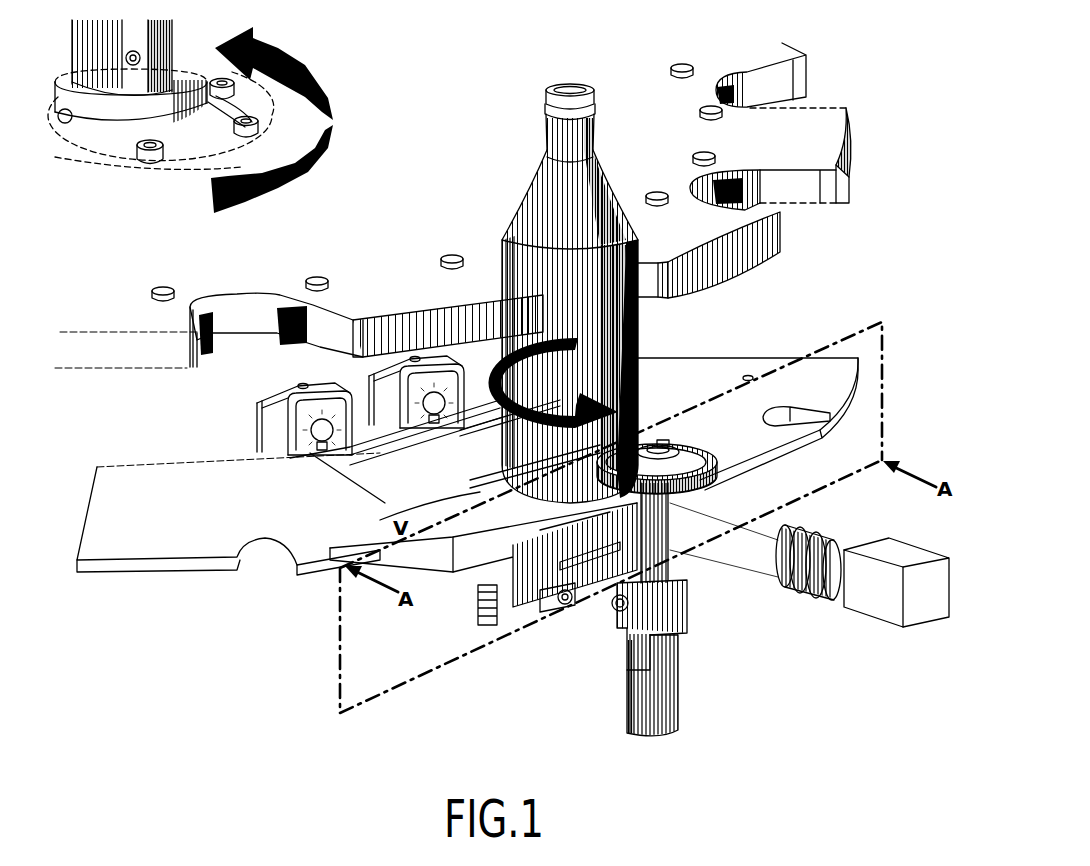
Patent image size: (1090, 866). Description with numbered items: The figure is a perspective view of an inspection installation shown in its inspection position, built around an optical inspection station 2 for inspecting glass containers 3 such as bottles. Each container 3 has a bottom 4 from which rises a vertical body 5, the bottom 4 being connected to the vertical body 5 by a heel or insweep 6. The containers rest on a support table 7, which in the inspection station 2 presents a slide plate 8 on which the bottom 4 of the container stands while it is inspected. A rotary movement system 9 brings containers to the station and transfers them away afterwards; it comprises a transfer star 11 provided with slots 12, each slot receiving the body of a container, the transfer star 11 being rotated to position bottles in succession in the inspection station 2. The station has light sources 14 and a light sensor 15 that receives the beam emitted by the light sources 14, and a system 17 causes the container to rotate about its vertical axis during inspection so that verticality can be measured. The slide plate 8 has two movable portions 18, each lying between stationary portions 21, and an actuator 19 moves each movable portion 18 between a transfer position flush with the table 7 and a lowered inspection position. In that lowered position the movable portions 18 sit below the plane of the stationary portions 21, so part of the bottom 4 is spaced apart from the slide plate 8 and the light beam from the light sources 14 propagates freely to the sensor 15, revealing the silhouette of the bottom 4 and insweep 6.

The optical inspection station 2 is at (809, 602).
The container 3 is at (550, 293).
The bottom 4 is at (532, 503).
The vertical body 5 is at (622, 328).
The heel or insweep 6 is at (505, 488).
The support table 7 is at (728, 380).
The slide plate 8 is at (397, 445).
The movement system 9 is at (767, 170).
The transfer star 11 is at (823, 128).
The slot 12 is at (805, 183).
The light source 14 is at (290, 394).
The light sensor 15 is at (883, 626).
The rotation system 17 is at (616, 652).
The movable portion 18 is at (403, 462).
The actuator 19 is at (561, 596).
The stationary portion 21 is at (418, 491).